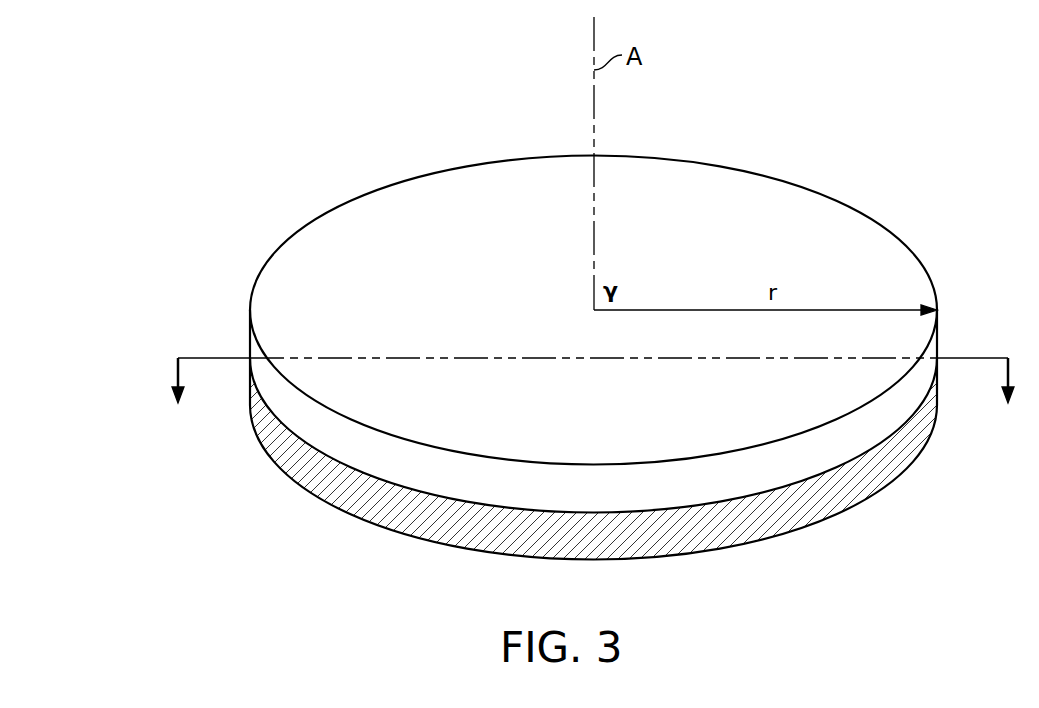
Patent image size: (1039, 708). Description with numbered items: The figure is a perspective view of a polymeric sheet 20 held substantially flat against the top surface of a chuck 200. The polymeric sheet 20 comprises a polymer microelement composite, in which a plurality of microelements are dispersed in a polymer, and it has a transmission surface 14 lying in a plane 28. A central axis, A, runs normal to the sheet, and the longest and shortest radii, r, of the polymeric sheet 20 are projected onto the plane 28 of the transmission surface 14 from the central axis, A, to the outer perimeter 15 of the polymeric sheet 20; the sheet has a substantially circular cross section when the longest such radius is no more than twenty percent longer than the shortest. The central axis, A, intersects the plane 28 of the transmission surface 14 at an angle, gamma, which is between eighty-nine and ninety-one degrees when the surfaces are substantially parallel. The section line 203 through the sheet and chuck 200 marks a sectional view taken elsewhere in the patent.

The transmission surface 14 is at (383, 218).
The plane of the transmission surface 28 is at (512, 188).
The outer perimeter 15 is at (937, 311).
The polymeric sheet 20 is at (727, 485).
The chuck 200 is at (805, 505).
The section line 203- 203 is at (593, 398).